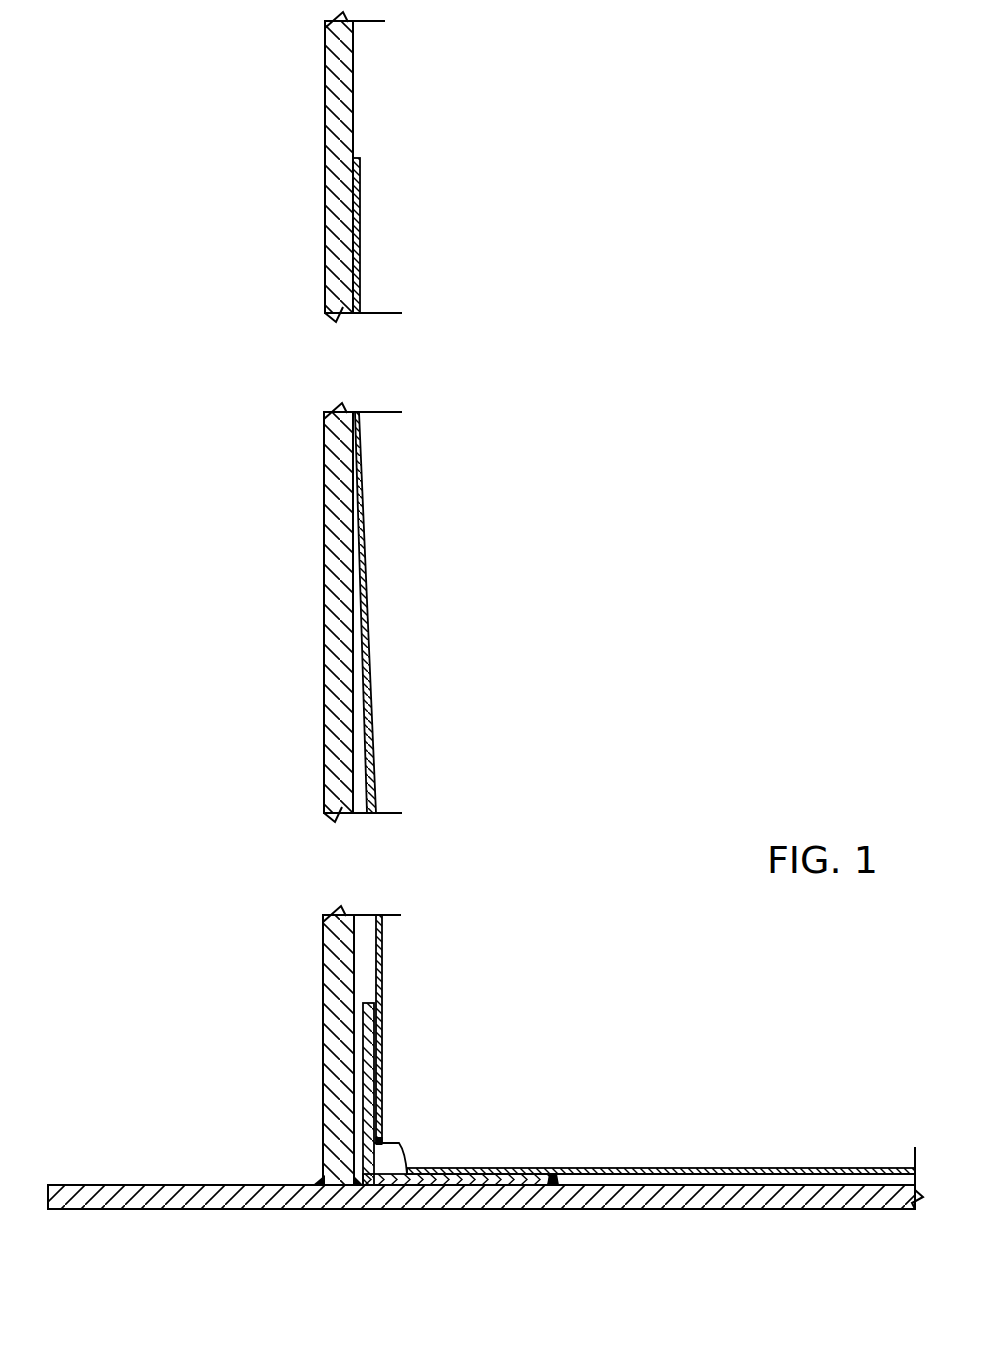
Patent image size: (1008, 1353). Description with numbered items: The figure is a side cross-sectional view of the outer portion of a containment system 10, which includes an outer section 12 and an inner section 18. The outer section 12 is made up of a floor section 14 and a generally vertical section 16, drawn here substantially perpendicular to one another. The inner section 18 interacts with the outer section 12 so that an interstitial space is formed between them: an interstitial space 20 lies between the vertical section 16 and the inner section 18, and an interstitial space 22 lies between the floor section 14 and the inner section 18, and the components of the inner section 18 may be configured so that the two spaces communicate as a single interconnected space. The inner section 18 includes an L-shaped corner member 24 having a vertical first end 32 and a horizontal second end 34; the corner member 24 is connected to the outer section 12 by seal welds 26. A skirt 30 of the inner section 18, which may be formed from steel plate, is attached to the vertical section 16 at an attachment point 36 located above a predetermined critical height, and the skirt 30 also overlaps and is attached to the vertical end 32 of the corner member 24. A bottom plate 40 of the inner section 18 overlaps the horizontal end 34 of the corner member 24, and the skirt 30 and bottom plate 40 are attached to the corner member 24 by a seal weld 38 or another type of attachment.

The system 10 is at (485, 1081).
The outer section 12 is at (338, 612).
The floor section 14 is at (677, 1200).
The vertical section 16 is at (327, 657).
The inner section 18 is at (639, 1162).
The interstitial space 20 is at (365, 962).
The interstitial space 22 is at (760, 1182).
The corner member 24 is at (363, 1035).
The seal weld 26 is at (553, 1174).
The skirt 30 is at (369, 607).
The first end 32 is at (367, 1135).
The second end 34 is at (515, 1185).
The attachment point 36 is at (360, 160).
The seal weld 38 is at (399, 1143).
The bottom plate 40 is at (843, 1168).